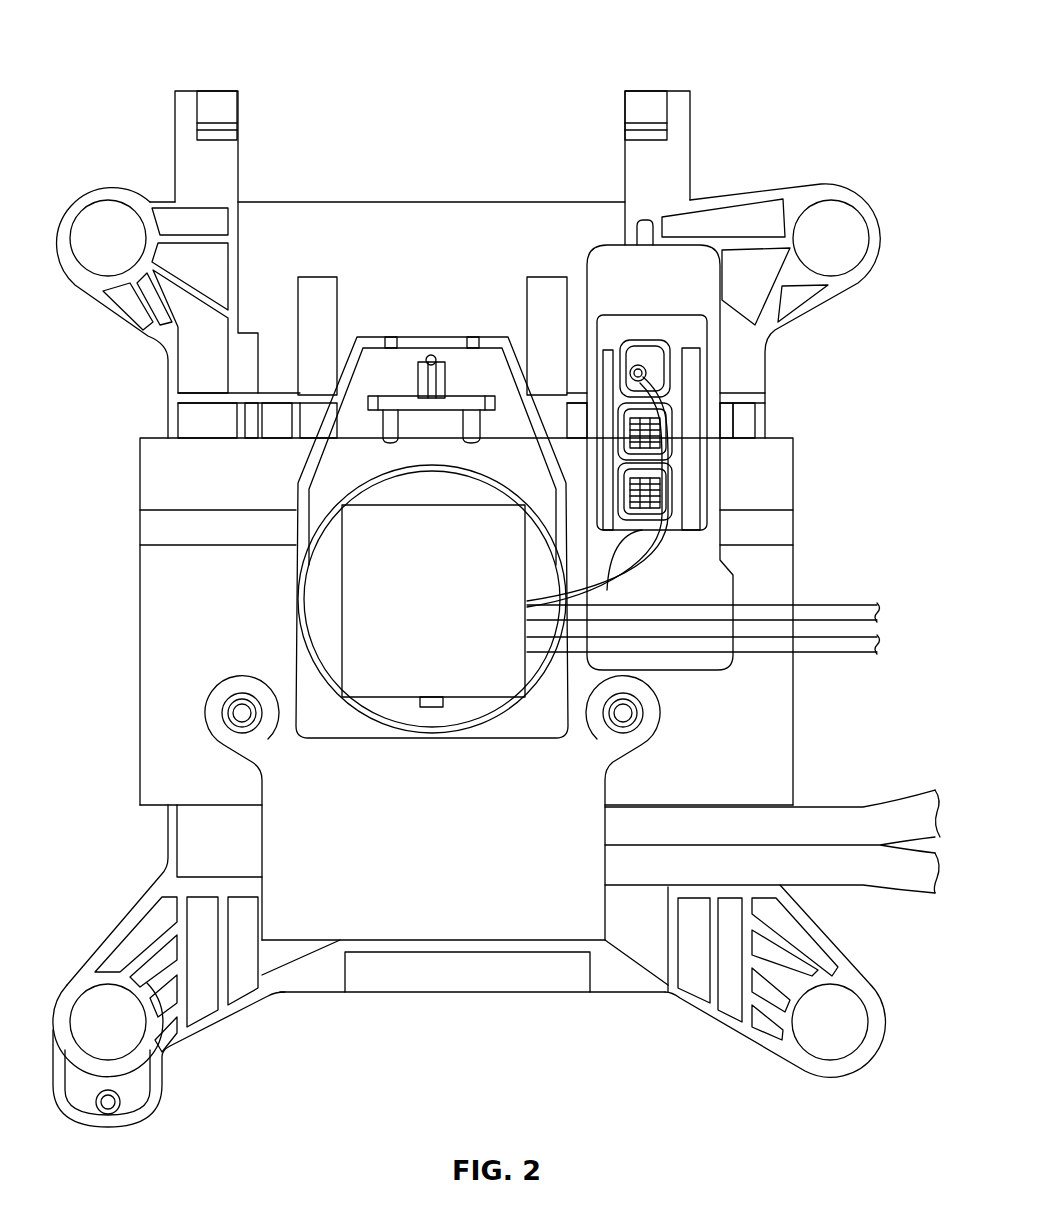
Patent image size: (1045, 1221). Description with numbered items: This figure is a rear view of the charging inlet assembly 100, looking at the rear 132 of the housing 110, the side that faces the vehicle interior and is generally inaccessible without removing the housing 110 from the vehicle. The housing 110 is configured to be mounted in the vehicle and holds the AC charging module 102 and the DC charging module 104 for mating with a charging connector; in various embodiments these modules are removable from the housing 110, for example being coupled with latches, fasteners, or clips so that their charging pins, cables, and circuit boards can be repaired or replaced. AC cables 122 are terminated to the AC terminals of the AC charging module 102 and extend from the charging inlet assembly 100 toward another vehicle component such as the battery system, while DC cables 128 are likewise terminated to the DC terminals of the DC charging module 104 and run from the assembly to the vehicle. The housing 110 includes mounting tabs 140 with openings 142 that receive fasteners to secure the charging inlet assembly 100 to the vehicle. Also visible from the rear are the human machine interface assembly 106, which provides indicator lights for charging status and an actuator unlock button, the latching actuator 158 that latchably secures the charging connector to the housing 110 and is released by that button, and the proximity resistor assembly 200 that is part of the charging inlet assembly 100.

The charging inlet assembly 100 is at (113, 95).
The AC charging module 102 is at (316, 444).
The DC charging module 104 is at (469, 901).
The human machine interface (HMI) assembly 106 is at (728, 457).
The housing 110 is at (192, 558).
The AC cables 122 is at (663, 444).
The DC cables 128 is at (866, 814).
The rear 132 is at (172, 706).
The mounting tabs 140 is at (794, 284).
The openings 142 is at (834, 239).
The latching actuator 158 is at (447, 385).
The proximity resistor assembly 200 is at (675, 493).